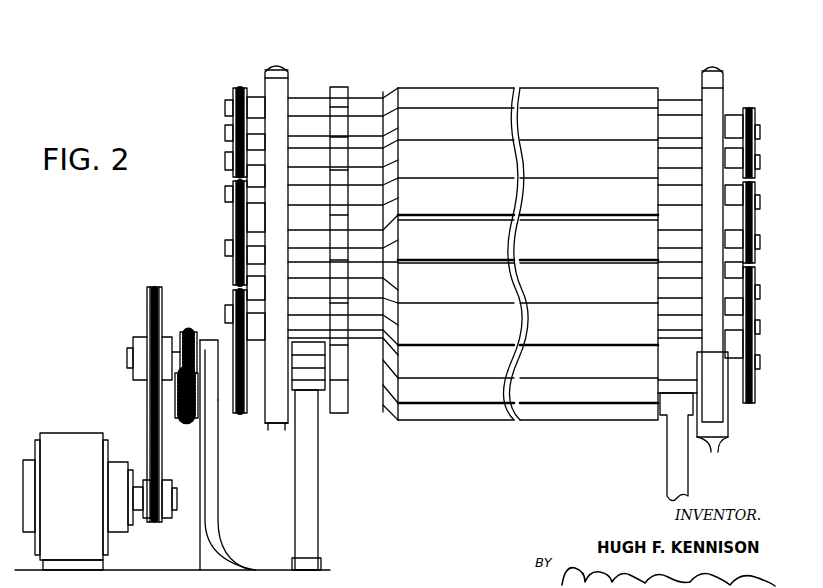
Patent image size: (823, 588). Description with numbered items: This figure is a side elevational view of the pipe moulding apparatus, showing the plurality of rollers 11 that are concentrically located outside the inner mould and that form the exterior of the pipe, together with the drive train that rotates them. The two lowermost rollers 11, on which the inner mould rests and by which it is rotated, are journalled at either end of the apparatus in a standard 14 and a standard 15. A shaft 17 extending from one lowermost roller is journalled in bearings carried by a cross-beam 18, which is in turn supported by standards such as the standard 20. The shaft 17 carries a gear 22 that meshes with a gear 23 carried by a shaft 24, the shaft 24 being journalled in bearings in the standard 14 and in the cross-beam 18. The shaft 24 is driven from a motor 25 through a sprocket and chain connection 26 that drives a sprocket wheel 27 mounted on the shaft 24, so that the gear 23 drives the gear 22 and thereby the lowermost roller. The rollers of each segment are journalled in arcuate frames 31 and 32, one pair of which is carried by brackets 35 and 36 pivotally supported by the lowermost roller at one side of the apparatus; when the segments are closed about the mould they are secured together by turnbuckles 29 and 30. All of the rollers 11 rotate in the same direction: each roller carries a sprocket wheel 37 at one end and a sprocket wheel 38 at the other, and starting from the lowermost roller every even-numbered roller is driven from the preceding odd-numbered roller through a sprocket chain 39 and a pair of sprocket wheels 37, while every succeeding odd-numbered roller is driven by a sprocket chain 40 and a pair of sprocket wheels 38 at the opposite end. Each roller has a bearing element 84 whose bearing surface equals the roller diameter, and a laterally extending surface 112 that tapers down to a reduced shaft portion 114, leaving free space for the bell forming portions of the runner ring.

The rollers 11 is at (487, 120).
The standard 14 is at (318, 470).
The standard 15 is at (672, 450).
The shaft 17 is at (225, 400).
The cross-beam 18 is at (212, 340).
The standard 20 is at (200, 520).
The gear 22 is at (190, 418).
The gear 23 is at (187, 332).
The shaft 24 is at (128, 358).
The motor 25 is at (65, 445).
The sprocket and chain connection 26 is at (147, 415).
The sprocket wheel 27 is at (147, 297).
The turnbuckle 29 is at (275, 66).
The turnbuckle 30 is at (712, 67).
The arcuate frame 31 is at (265, 85).
The arcuate frame 32 is at (718, 88).
The bracket 35 is at (285, 425).
The bracket 36 is at (714, 415).
The sprocket wheel 37 is at (233, 97).
The sprocket wheel 38 is at (750, 108).
The sprocket chain 39 is at (233, 172).
The sprocket chain 40 is at (757, 140).
The bearing element 84 is at (340, 87).
The laterally extending surface 112 is at (400, 88).
The reduced shaft portion 114 is at (365, 92).